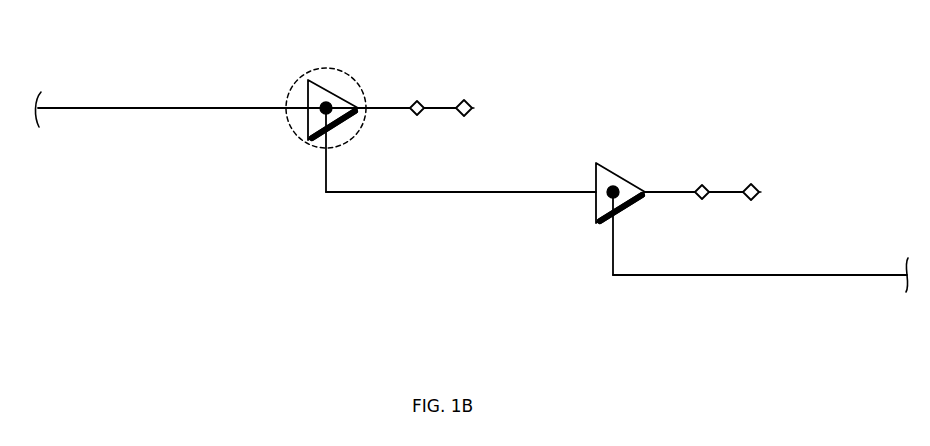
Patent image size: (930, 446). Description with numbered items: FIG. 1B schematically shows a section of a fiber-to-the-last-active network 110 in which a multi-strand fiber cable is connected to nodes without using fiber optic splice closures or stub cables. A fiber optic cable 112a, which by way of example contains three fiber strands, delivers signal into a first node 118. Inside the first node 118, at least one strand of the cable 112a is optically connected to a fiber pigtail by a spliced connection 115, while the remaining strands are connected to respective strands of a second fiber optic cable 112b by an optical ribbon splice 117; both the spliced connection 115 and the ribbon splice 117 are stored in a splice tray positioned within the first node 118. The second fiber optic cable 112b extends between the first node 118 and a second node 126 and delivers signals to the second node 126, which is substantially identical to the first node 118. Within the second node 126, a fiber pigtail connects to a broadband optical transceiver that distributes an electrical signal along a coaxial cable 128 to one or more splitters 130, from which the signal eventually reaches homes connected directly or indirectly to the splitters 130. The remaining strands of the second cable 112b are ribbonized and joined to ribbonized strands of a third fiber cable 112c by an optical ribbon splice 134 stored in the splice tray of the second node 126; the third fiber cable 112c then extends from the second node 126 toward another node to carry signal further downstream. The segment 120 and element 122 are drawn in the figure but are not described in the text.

The optical communication system 110 is at (82, 66).
The fiber optic cable 112a is at (112, 108).
The second fiber optic cable 112b is at (377, 192).
The third fiber cable 112c is at (775, 275).
The spliced connection 115 is at (302, 132).
The optical ribbon splice 117 is at (275, 142).
The first node 118 is at (335, 92).
The amplifier output line 120 is at (387, 108).
The first optical filter 122 is at (425, 117).
The second node 126 is at (618, 177).
The coaxial cable 128 is at (573, 231).
The optical ribbon splice 134 is at (567, 221).
The splitters 130 is at (710, 200).